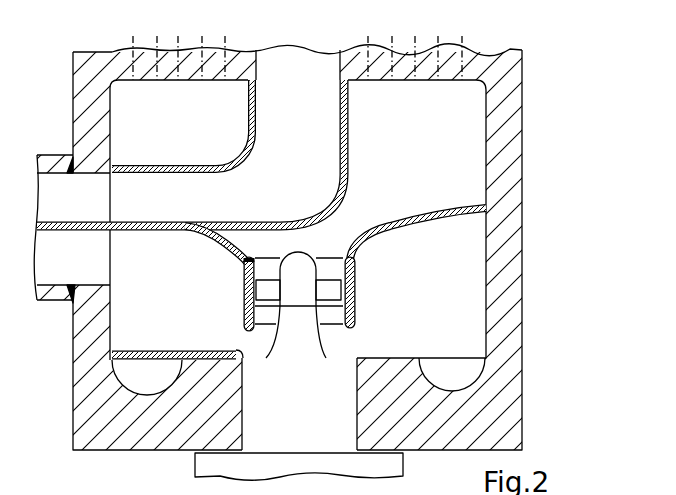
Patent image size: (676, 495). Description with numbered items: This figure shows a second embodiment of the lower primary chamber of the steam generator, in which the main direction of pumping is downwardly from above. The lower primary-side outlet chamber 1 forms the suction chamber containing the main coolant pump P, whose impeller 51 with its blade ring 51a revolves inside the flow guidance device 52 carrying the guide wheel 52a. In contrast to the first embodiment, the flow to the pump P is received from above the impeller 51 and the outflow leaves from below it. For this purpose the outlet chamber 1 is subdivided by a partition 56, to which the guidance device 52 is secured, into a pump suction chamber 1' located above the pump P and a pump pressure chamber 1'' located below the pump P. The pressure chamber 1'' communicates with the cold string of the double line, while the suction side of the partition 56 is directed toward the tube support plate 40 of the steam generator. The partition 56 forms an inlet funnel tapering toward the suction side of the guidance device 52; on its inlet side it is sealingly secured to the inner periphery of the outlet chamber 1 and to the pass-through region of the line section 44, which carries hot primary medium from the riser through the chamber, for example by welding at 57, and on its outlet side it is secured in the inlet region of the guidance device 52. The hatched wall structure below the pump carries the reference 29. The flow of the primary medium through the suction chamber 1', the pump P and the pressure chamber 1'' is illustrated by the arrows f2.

The outlet chamber 1 is at (338, 247).
The pump suction chamber 1' is at (458, 160).
The pump pressure chamber 1'' is at (438, 270).
The base plate 29 is at (390, 416).
The tube support plate 40 is at (429, 70).
The line section 44 is at (350, 112).
The impeller 51 is at (300, 284).
The blade ring 51a is at (270, 286).
The flow guidance device 52 is at (358, 307).
The guide wheel 52a is at (268, 317).
The partition 56 is at (417, 222).
The welding 57 is at (186, 229).
The main coolant pump P is at (323, 395).
The flow arrows f2 is at (203, 88).